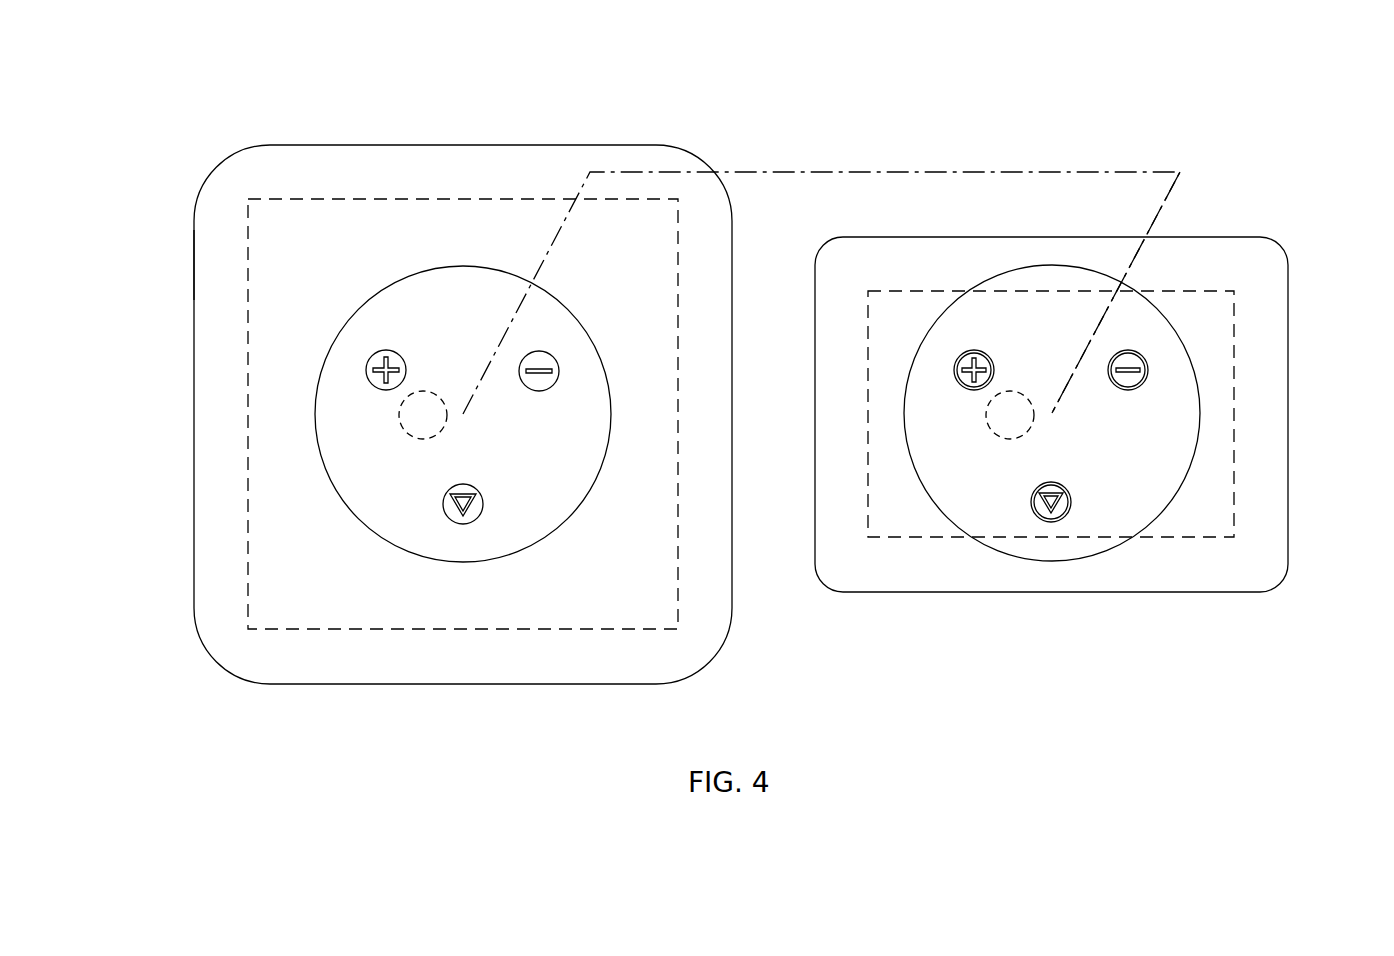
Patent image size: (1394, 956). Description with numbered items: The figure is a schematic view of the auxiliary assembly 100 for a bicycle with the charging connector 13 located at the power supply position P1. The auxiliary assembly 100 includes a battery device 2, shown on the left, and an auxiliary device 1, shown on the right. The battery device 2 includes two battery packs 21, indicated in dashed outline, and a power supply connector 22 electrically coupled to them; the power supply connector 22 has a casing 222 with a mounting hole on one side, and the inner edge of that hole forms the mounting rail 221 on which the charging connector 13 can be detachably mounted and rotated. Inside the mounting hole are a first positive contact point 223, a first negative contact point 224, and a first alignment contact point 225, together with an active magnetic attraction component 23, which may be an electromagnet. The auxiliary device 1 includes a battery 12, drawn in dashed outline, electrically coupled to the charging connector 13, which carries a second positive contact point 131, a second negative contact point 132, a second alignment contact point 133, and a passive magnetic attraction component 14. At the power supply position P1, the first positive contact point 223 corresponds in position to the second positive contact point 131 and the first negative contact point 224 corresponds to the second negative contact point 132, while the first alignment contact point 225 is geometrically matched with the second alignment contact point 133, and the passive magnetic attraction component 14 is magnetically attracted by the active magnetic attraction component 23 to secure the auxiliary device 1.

The auxiliary assembly 100 is at (226, 124).
The battery device 2 is at (460, 409).
The power supply connector 22 is at (380, 150).
The casing 222 is at (213, 244).
The battery packs 21 is at (380, 630).
The mounting rail 221 is at (360, 520).
The first positive contact point 223 is at (368, 365).
The first negative contact point 224 is at (548, 378).
The first alignment contact point 225 is at (470, 510).
The active magnetic attraction component 23 is at (398, 424).
The power supply position P1 is at (1244, 198).
The auxiliary device 1 is at (1056, 444).
The battery 12 is at (916, 540).
The charging connector 13 is at (1180, 481).
The second positive contact point 131 is at (958, 362).
The second negative contact point 132 is at (1148, 360).
The second alignment contact point 133 is at (1062, 520).
The passive magnetic attraction component 14 is at (985, 426).